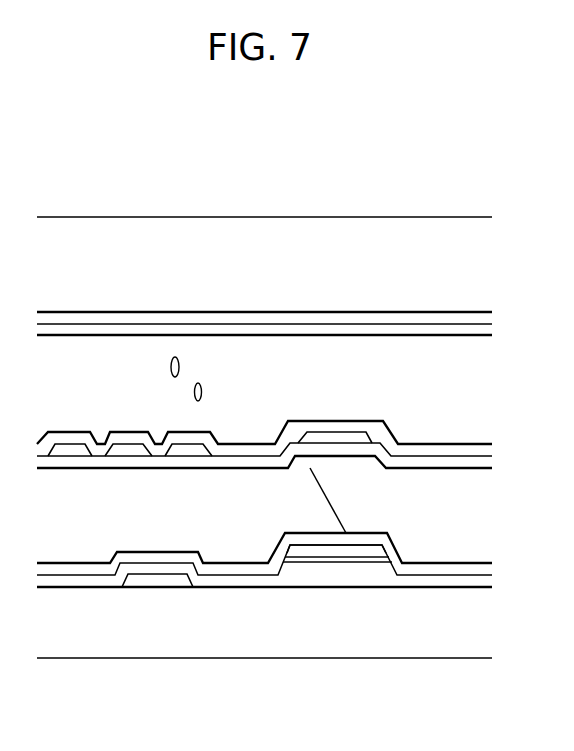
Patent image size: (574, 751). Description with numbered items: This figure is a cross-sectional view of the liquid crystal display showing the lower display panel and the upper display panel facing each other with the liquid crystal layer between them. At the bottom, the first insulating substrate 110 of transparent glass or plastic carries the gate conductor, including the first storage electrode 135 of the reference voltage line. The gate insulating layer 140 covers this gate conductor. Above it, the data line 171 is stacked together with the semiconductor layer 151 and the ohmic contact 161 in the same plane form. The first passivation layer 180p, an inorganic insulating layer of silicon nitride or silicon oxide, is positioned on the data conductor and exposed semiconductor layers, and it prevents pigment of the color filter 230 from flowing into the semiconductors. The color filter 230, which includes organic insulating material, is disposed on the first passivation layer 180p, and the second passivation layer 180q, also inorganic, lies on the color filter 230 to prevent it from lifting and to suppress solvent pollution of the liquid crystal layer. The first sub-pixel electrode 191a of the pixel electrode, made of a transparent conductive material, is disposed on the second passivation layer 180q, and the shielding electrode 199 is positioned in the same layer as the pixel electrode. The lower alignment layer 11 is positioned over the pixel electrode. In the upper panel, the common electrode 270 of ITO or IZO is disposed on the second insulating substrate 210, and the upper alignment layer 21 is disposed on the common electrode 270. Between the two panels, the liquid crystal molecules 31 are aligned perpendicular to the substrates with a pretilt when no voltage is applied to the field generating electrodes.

The second insulating substrate 210 is at (153, 233).
The common electrode 270 is at (313, 318).
The upper alignment layer 21 is at (390, 330).
The liquid crystal molecule 31 is at (182, 362).
The lower alignment layer 11 is at (429, 450).
The first sub-pixel electrode 191a is at (130, 450).
The second passivation layer 180q is at (243, 463).
The shielding electrode 199 is at (333, 440).
The color filter 230 is at (77, 532).
The first storage electrode 135 is at (158, 582).
The gate insulating layer 140 is at (212, 579).
The semiconductor layer 151 is at (315, 570).
The ohmic contact 161 is at (340, 559).
The data line 171 is at (363, 550).
The first passivation layer 180p is at (432, 568).
The first insulating substrate 110 is at (477, 632).